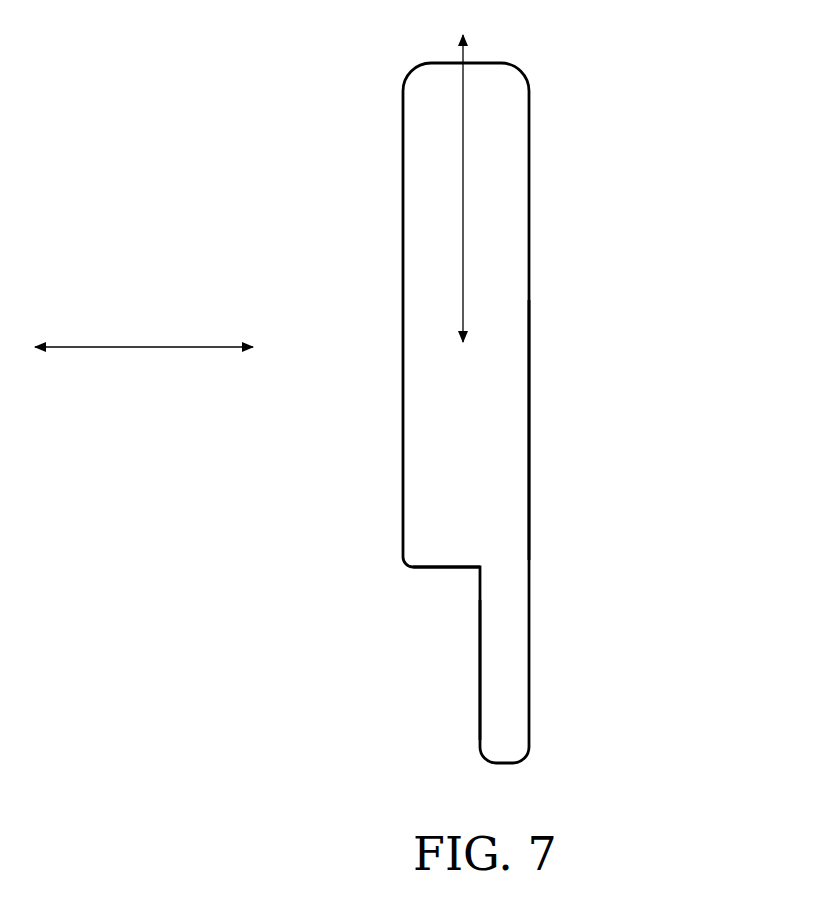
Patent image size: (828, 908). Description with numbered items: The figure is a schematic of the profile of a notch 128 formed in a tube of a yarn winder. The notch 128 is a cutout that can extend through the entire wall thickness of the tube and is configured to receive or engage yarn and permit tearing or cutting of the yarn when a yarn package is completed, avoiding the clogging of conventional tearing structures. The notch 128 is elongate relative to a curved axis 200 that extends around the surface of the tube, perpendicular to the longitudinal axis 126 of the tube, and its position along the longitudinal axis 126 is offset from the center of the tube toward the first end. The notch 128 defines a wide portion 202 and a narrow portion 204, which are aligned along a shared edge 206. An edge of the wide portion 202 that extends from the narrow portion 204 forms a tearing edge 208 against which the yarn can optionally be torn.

The longitudinal axis 126 is at (78, 347).
The notch 128 is at (529, 143).
The curved axis 200 is at (463, 240).
The wide portion 202 is at (488, 414).
The narrow portion 204 is at (500, 660).
The shared edge 206 is at (529, 490).
The tearing edge 208 is at (450, 567).